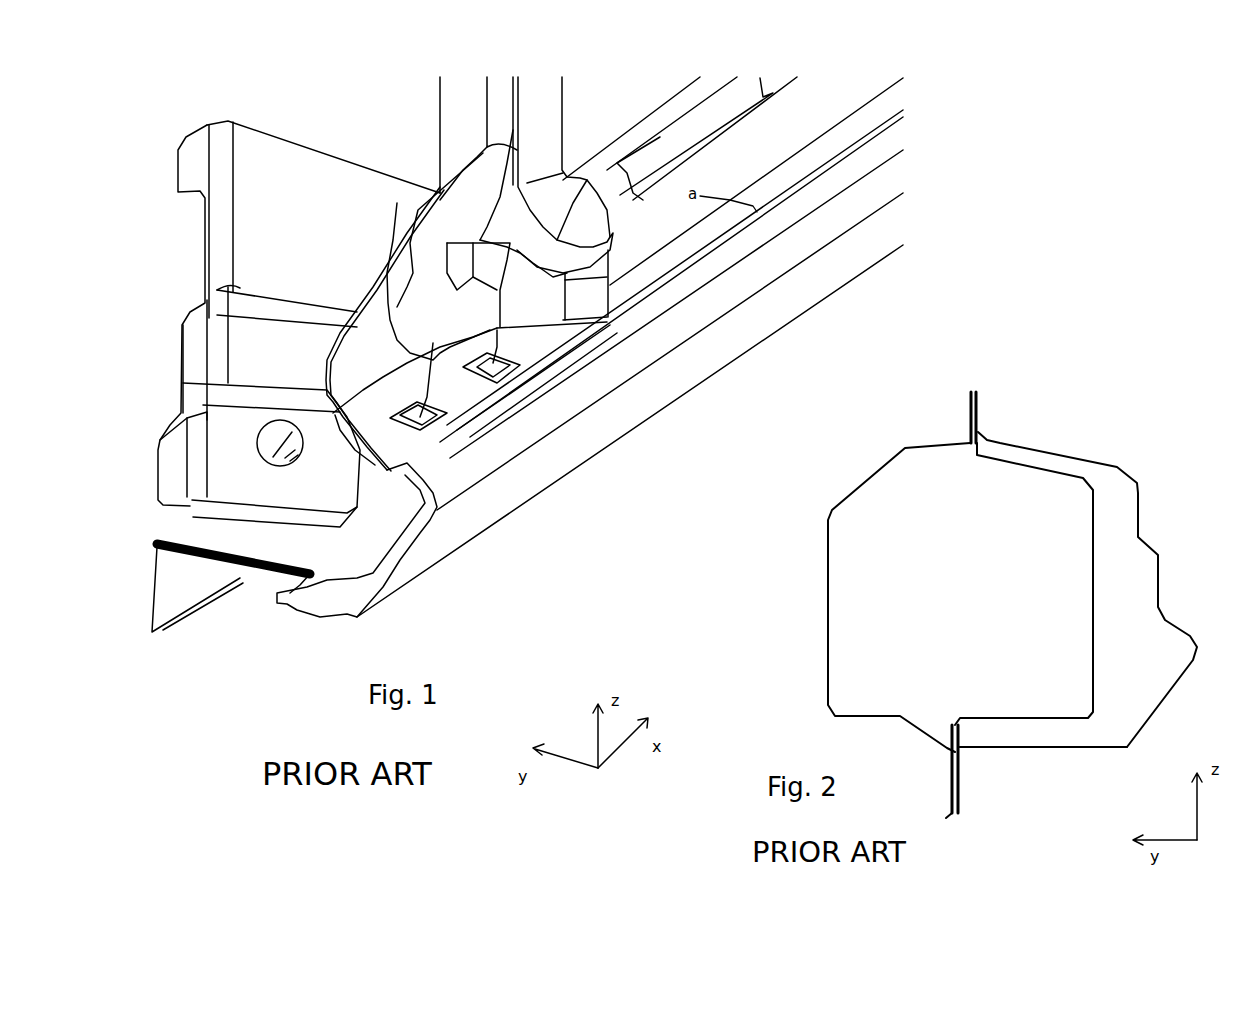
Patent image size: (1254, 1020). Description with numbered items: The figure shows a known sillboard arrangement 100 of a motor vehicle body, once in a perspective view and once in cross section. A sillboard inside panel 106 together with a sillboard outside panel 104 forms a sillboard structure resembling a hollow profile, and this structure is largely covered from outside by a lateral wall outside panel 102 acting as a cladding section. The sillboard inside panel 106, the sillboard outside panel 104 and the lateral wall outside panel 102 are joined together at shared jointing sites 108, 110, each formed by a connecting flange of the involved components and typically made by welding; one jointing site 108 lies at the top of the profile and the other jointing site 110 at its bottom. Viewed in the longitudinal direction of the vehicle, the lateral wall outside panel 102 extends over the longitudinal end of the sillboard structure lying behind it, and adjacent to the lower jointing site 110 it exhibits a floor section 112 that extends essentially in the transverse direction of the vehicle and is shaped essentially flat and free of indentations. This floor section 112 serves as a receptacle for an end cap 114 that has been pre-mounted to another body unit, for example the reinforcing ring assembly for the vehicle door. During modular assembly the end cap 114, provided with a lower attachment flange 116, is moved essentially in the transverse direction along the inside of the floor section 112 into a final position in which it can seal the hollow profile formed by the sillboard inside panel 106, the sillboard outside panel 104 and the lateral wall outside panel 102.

In FIG. 1, the sillboard arrangement 100 is at (515, 602).
In FIG. 1, the lateral wall outside panel 102 is at (557, 474).
In FIG. 2, the lateral wall outside panel 102 is at (1160, 600).
In FIG. 2, the sillboard outside panel 104 is at (1093, 542).
In FIG. 2, the sillboard inside panel 106 is at (830, 548).
In FIG. 2, the jointing site 108 is at (982, 410).
In FIG. 2, the jointing site 110 is at (960, 790).
In FIG. 1, the floor section 112 is at (287, 597).
In FIG. 2, the floor section 112 is at (1073, 750).
In FIG. 1, the end cap 114 is at (227, 450).
In FIG. 1, the lower attachment flange 116 is at (235, 545).